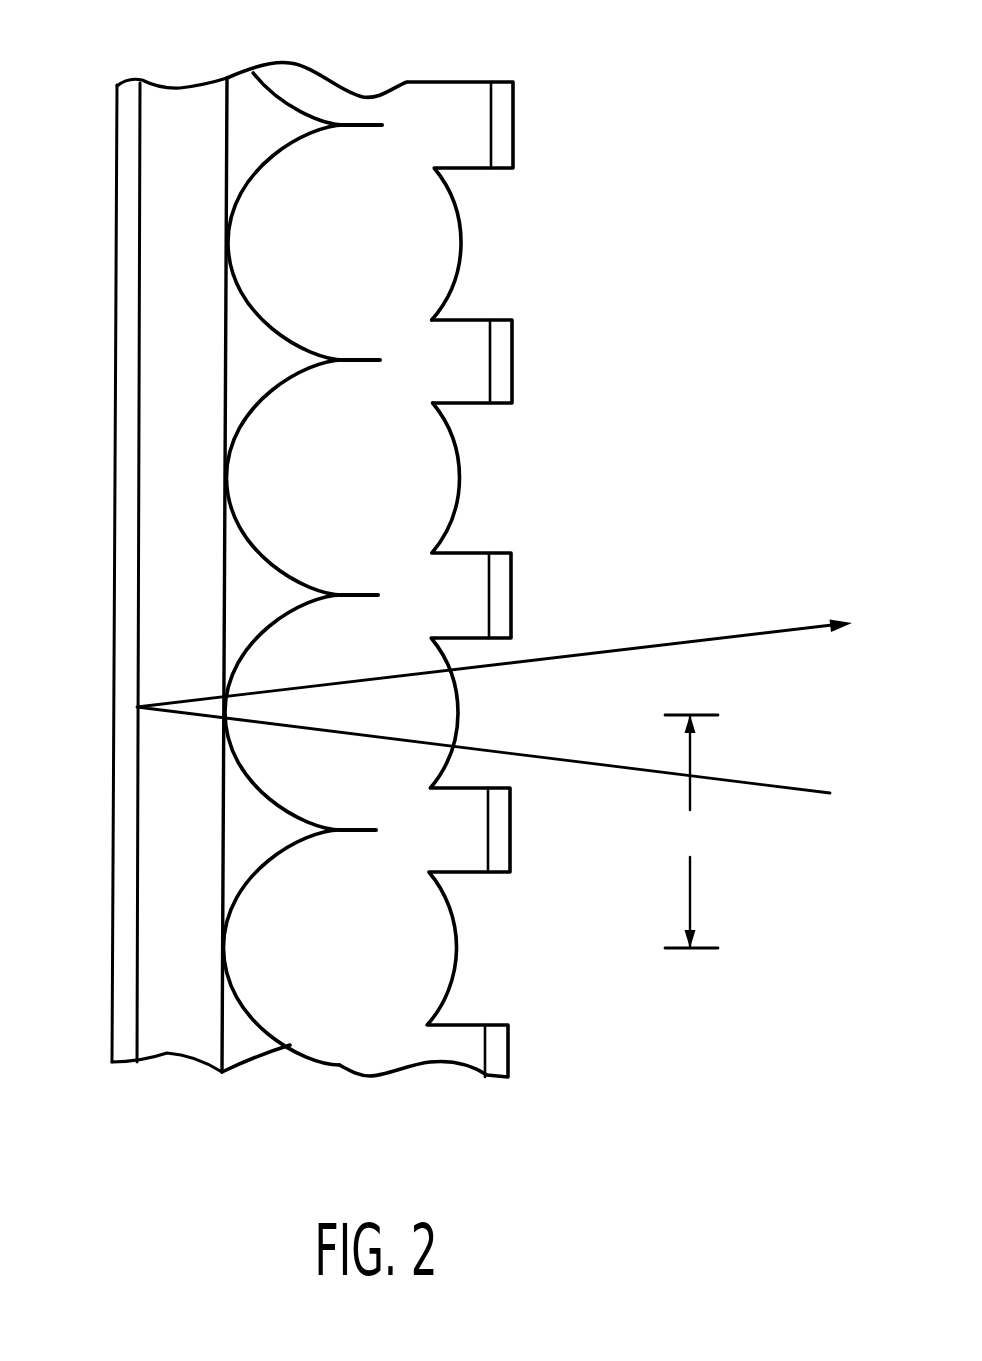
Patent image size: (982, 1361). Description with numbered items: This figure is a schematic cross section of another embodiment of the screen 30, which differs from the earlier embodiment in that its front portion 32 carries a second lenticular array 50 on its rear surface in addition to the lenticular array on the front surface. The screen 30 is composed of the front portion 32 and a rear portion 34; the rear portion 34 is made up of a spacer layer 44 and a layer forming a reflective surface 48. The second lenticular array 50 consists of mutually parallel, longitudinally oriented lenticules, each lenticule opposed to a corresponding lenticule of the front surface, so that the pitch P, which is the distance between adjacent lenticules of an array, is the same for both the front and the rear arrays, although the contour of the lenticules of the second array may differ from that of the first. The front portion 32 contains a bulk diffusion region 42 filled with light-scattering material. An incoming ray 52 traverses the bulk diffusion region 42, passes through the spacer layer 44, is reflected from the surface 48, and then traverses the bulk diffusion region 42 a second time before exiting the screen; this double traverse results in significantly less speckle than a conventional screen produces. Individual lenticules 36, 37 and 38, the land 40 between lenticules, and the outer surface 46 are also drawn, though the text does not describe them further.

The screen 30 is at (18, 607).
The front portion 32 is at (508, 1097).
The rear portion 34 is at (102, 1097).
The lenslet 36 is at (457, 943).
The lenslet curved surface 37 is at (468, 255).
The lenslet 38 is at (460, 550).
The flat land between lenslets 40 is at (513, 337).
The bulk diffusion region 42 is at (356, 115).
The spacer layer 44 is at (192, 102).
The outer surface of diffuser 46 is at (125, 159).
The reflective surface 48 is at (140, 340).
The second lenticular array 50 is at (288, 330).
The ray 52 is at (803, 793).
The pitch P is at (691, 831).